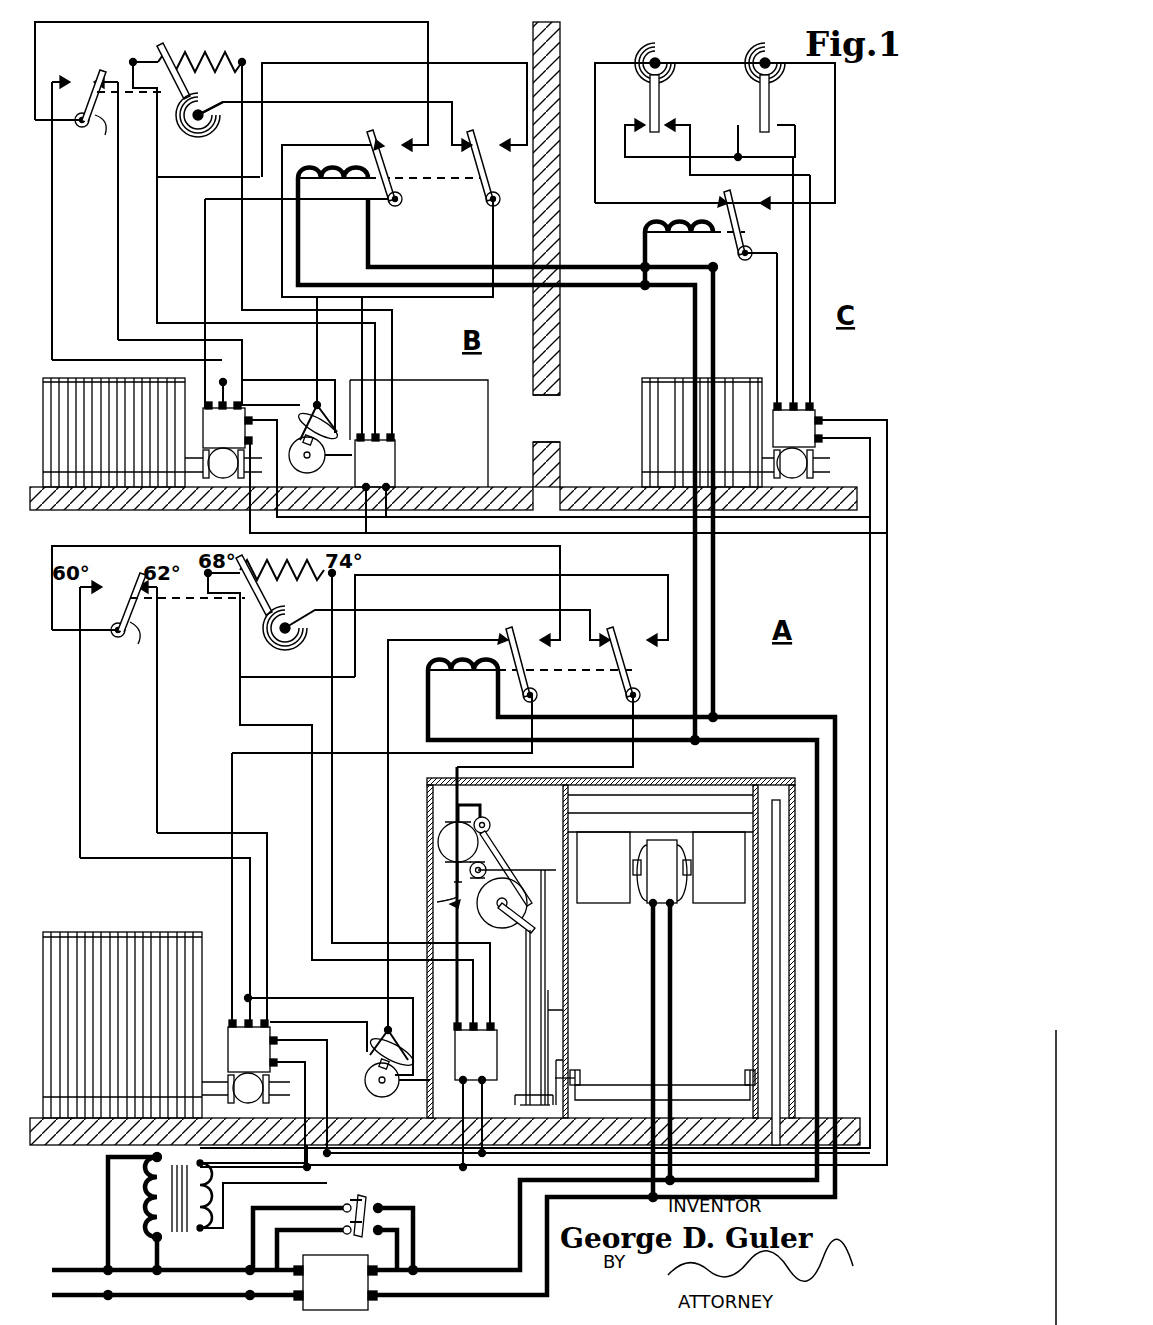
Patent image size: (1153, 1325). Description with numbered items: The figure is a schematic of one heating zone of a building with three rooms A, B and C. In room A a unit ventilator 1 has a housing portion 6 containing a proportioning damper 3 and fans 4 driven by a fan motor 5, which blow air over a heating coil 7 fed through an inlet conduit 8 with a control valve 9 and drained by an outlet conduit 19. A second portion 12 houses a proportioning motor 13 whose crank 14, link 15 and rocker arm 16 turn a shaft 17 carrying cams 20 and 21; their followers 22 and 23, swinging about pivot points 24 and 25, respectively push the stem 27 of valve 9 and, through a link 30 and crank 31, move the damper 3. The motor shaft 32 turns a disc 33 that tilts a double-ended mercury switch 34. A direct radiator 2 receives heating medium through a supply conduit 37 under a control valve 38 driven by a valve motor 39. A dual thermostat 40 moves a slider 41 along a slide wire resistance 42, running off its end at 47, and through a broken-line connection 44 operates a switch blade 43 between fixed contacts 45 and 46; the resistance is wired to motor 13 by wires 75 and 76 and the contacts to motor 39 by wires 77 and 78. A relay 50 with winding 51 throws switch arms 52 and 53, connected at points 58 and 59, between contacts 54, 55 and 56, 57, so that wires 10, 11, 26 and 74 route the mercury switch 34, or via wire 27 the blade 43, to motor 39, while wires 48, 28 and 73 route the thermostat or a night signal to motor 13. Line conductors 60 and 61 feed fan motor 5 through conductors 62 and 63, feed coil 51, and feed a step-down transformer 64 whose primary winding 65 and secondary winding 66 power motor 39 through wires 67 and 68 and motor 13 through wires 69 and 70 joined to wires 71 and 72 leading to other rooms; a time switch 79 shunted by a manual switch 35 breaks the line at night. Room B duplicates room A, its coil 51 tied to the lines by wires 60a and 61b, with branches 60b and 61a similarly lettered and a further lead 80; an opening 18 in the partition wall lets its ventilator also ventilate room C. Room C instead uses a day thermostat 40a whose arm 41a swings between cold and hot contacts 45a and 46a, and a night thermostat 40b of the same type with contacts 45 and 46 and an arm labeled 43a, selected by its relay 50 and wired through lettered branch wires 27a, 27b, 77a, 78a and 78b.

The unit ventilator 1 is at (492, 410).
The direct radiator 2 is at (46, 370).
The fresh air and recirculated air proportioning damper 3 is at (686, 1088).
The air circulating fans 4 is at (606, 904).
The electric motor 5 is at (642, 898).
The portion of the unit ventilator 6 is at (611, 948).
The heating coil 7 is at (660, 811).
The inlet conduit 8 is at (457, 799).
The control valve 9 is at (438, 843).
The wire 10 is at (280, 380).
The wire 11 is at (282, 250).
The portion of the unit ventilator 12 is at (509, 981).
The proportioning motor 13 is at (455, 1030).
The crank 14 is at (534, 1105).
The link 15 is at (526, 1018).
The rocker arm 16 is at (523, 938).
The shaft 17 is at (480, 908).
The opening 18 is at (560, 395).
The outlet conduit 19 is at (774, 1070).
The cam 20 is at (503, 872).
The cam 21 is at (532, 916).
The cam follower 22 is at (493, 822).
The cam follower 23 is at (533, 868).
The pivot point 24 is at (478, 813).
The pivot point 25 is at (471, 872).
The wire 26 is at (270, 392).
The valve stem 27 is at (364, 40).
The branch wire 27a is at (600, 155).
The branch wire 27b is at (835, 110).
The wire 28 is at (360, 354).
The link 30 is at (563, 1012).
The crank 31 is at (564, 1060).
The shaft 32 is at (338, 460).
The disc 33 is at (355, 1100).
The double-ended mercury switch 34 is at (300, 417).
The manual switch 35 is at (380, 1196).
The supply conduit 37 is at (262, 470).
The control valve 38 is at (508, 775).
The motor 39 is at (198, 424).
The electric proportioning thermostat 40 is at (196, 131).
The day thermostat 40a is at (637, 51).
The night thermostat 40b is at (752, 51).
The movable arm 41 is at (184, 82).
The arm 41a is at (664, 94).
The slide wire resistance 42 is at (186, 54).
The switch blade 43 is at (90, 368).
The thermostat arm 43a is at (774, 112).
The broken line 44 is at (131, 104).
The fixed electrical contact 45 is at (62, 80).
The fixed cold contact 45a is at (634, 118).
The fixed electrical contact 46 is at (96, 71).
The fixed hot contact 46a is at (676, 118).
The slider off position 47 is at (144, 56).
The wire 48 is at (354, 106).
The electric relay device 50 is at (448, 212).
The winding 51 is at (332, 168).
The switch arm 52 is at (388, 163).
The switch arm 53 is at (485, 166).
The electrical contact 54 is at (368, 124).
The electrical contact 55 is at (408, 140).
The electrical contact 56 is at (472, 124).
The electrical contact 57 is at (500, 132).
The electrical connection point 58 is at (538, 690).
The electrical connection point 59 is at (641, 686).
The line conductor 60 is at (820, 926).
The wire 60a is at (690, 554).
The branch wire 60b is at (640, 248).
The line conductor 61 is at (823, 974).
The power line 61a is at (715, 598).
The wire 61b is at (703, 254).
The conductor 62 is at (670, 1028).
The conductor 63 is at (652, 1068).
The step-down transformer 64 is at (180, 1232).
The primary winding 65 is at (148, 1195).
The secondary winding 66 is at (214, 1192).
The wire 67 is at (266, 445).
The wire 68 is at (328, 1098).
The wire 69 is at (416, 487).
The wire 70 is at (368, 525).
The wire 71 is at (868, 654).
The wire 72 is at (883, 698).
The wire 73 is at (309, 81).
The wire 74 is at (205, 262).
The wire 75 is at (242, 146).
The wire 76 is at (157, 220).
The wire 77 is at (55, 248).
The branch wire 77a is at (738, 138).
The wire 78 is at (118, 273).
The branch wire 78a is at (712, 175).
The branch wire 78b is at (805, 149).
The time switch 79 is at (318, 1257).
The conductor 80 is at (456, 298).